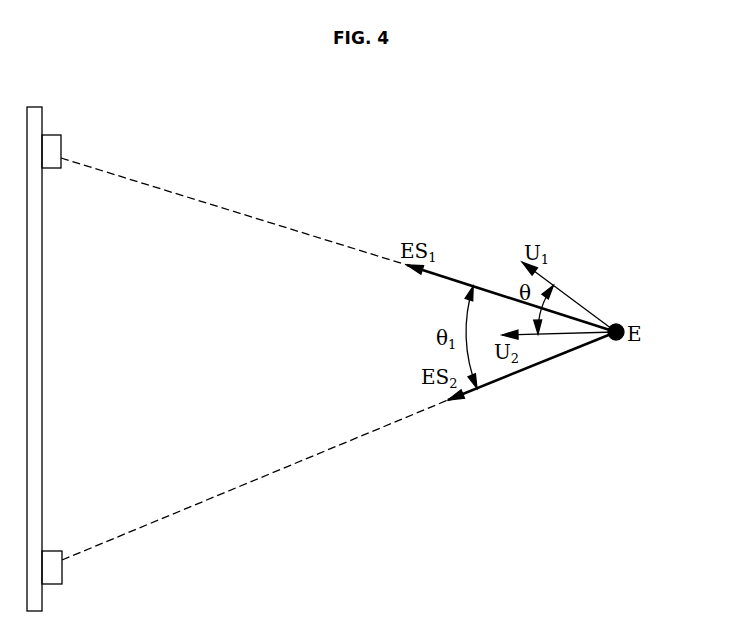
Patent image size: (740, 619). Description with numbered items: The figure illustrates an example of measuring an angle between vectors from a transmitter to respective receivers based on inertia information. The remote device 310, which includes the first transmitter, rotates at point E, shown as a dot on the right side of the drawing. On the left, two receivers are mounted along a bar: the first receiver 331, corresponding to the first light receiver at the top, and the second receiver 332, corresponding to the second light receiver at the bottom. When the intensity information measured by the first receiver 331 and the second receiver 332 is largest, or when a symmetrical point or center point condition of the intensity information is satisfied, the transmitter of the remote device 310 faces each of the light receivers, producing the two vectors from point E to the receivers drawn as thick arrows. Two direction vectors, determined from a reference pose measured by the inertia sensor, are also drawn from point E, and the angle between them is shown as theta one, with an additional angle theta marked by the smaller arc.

The remote device 310 is at (617, 324).
The first receiver 331 is at (75, 135).
The second receiver 332 is at (75, 583).